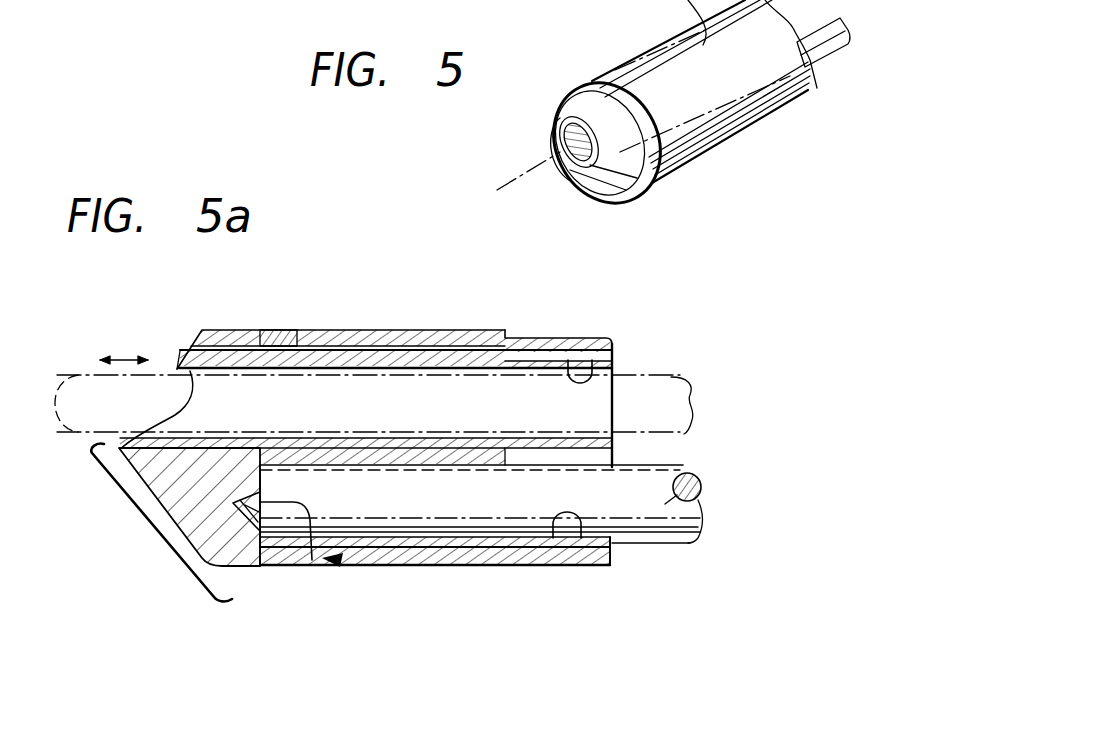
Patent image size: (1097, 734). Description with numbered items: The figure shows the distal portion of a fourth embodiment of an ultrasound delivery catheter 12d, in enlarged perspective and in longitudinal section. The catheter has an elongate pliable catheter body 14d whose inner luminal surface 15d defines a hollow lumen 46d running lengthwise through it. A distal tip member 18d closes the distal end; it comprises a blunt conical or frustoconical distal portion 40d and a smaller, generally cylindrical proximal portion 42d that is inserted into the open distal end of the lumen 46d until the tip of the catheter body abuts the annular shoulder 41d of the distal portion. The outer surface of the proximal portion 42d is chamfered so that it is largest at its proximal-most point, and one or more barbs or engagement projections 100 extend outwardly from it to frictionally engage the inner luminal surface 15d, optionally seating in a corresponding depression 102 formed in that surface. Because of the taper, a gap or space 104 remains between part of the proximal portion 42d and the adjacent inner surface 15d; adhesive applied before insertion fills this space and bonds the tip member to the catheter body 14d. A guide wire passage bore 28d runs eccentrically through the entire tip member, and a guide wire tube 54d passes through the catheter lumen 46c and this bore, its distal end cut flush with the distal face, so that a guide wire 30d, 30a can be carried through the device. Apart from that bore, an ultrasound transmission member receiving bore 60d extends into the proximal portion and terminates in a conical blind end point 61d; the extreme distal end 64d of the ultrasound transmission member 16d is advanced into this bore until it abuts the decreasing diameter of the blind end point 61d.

In FIG. 5, the catheter 12d is at (720, 163).
In FIG. 5a, the catheter body 14d is at (408, 344).
In FIG. 5a, the inner luminal surface 15d is at (597, 338).
In FIG. 5, the ultrasound transmission member 16d is at (830, 40).
In FIG. 5a, the ultrasound transmission member 16d is at (701, 486).
In FIG. 5, the distal tip member 18d is at (565, 110).
In FIG. 5a, the distal tip member 18d is at (240, 330).
In FIG. 5, the guide wire passage bore 28d is at (558, 153).
In FIG. 5a, the guide wire passage bore 28d is at (177, 363).
In FIG. 5a, the guide wire proximal portion 30a is at (674, 381).
In FIG. 5a, the guide wire 30d is at (75, 394).
In FIG. 5a, the distal portion 40d is at (138, 542).
In FIG. 5a, the annular shoulder 41d is at (250, 343).
In FIG. 5a, the proximal portion 42d is at (445, 357).
In FIG. 5a, the lumen wall 46c is at (600, 457).
In FIG. 5a, the hollow lumen 46d is at (618, 358).
In FIG. 5, the guide wire tube 54d is at (558, 156).
In FIG. 5a, the guide wire tube 54d is at (248, 437).
In FIG. 5a, the ultrasound transmission member receiving bore 60d is at (233, 503).
In FIG. 5a, the blind end point 61d is at (234, 484).
In FIG. 5a, the extreme distal end 64d is at (312, 560).
In FIG. 5a, the engagement projection 100 is at (497, 340).
In FIG. 5a, the depression 102 is at (513, 340).
In FIG. 5a, the gap or space 104 is at (297, 345).